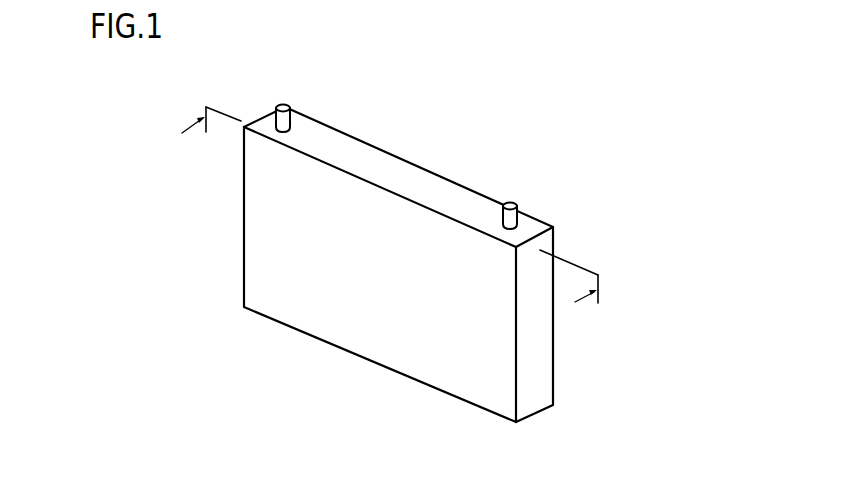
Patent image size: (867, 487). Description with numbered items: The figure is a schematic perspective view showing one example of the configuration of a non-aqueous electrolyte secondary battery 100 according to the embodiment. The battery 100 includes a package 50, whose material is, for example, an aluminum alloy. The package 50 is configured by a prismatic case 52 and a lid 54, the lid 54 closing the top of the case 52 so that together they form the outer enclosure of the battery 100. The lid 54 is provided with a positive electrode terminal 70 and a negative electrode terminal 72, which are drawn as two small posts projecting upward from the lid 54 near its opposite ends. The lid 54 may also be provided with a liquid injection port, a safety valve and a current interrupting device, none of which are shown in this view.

The non-aqueous electrolyte secondary battery 100 is at (680, 142).
The package 50 is at (637, 210).
The prismatic case 52 is at (535, 355).
The lid 54 is at (527, 229).
The positive electrode terminal 70 is at (282, 103).
The negative electrode terminal 72 is at (509, 200).